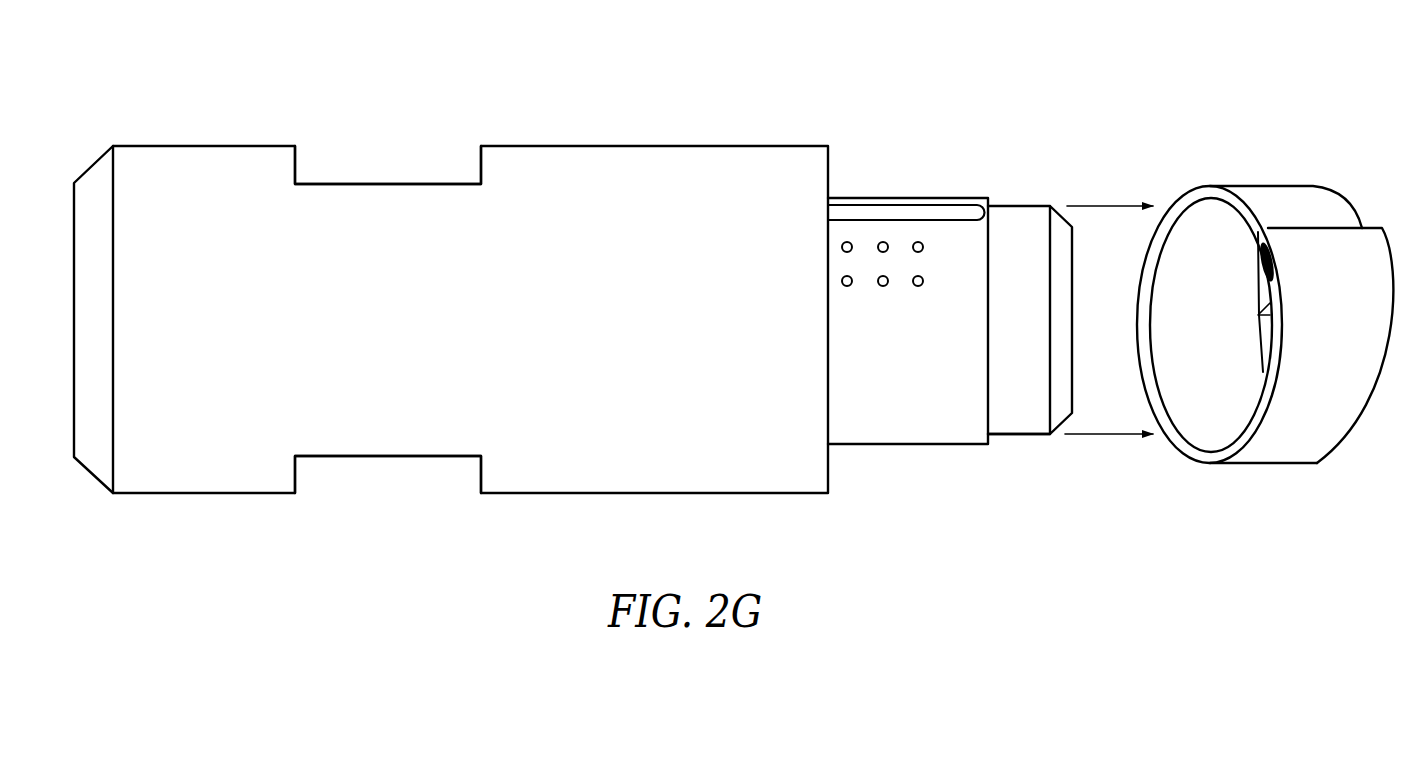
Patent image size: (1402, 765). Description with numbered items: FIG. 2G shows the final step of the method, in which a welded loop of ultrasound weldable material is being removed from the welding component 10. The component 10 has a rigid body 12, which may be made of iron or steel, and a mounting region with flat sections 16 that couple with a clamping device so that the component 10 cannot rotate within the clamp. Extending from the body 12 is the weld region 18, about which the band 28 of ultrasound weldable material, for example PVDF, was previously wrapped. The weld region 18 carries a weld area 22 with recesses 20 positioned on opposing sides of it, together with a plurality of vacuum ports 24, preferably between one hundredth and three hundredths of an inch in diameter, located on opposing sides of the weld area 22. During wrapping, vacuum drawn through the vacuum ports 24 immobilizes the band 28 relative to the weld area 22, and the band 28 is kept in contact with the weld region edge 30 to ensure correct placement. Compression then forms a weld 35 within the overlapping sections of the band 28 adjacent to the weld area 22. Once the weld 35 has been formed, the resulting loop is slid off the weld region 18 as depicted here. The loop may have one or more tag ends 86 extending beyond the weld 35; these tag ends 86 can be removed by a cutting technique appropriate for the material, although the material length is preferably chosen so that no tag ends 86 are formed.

The welding component 10 is at (547, 100).
The rigid body 12 is at (1010, 437).
The flat sections 16 is at (362, 184).
The weld region 18 is at (1013, 203).
The recesses 20 is at (912, 212).
The weld area 22 is at (868, 200).
The vacuum ports 24 is at (918, 287).
The band 28 is at (1277, 463).
The weld region edge 30 is at (828, 470).
The weld 35 is at (1262, 243).
The tag ends 86 is at (1268, 232).